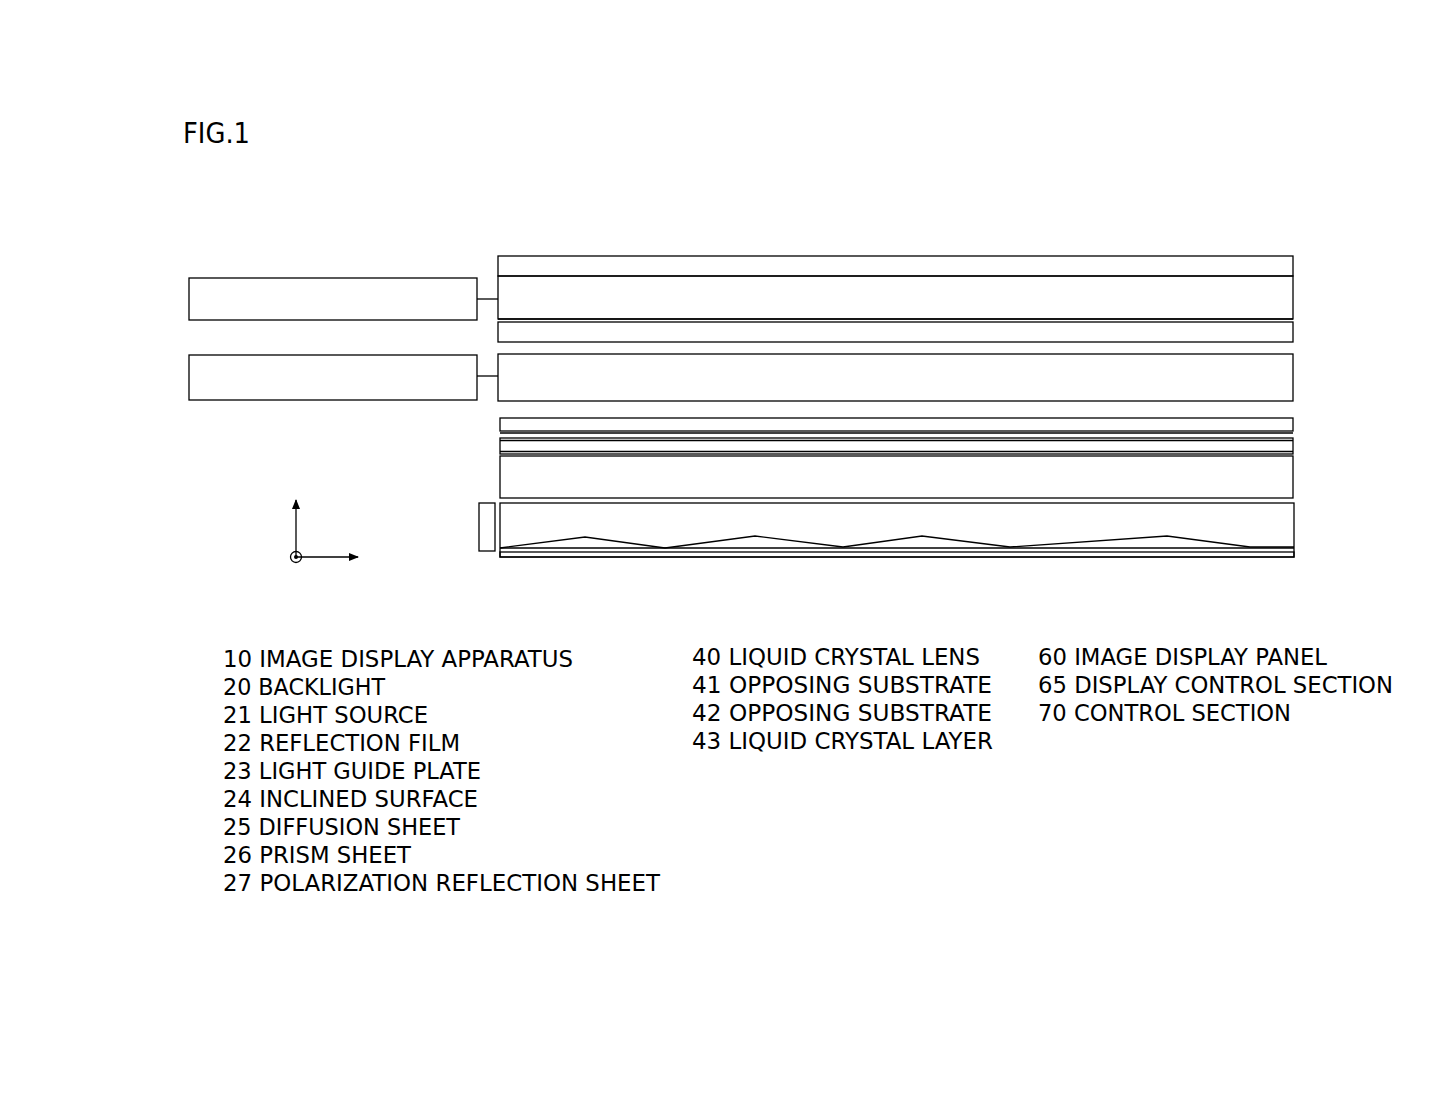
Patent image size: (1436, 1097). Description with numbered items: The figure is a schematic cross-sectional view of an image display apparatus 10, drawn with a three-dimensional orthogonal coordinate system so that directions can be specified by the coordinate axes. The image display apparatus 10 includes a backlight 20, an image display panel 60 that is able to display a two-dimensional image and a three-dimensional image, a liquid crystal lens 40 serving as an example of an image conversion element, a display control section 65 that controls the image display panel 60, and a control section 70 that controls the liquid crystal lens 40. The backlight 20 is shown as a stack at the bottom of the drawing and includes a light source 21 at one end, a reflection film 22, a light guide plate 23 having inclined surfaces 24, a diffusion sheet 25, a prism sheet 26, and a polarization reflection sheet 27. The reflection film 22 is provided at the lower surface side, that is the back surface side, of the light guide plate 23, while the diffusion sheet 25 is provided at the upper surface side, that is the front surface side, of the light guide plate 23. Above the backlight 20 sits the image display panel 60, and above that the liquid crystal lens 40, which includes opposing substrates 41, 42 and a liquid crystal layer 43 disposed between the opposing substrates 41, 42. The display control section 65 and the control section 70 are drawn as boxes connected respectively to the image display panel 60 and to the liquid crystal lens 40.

The image display apparatus 10 is at (1338, 187).
The backlight 20 is at (932, 497).
The light source 21 is at (480, 548).
The reflection film 22 is at (1137, 558).
The light guide plate 23 is at (897, 549).
The inclined surfaces 24 is at (567, 548).
The diffusion sheet 25 is at (1263, 478).
The prism sheet 26 is at (1277, 447).
The polarization reflection sheet 27 is at (1283, 425).
The liquid crystal lens 40 is at (964, 288).
The opposing substrate 41 is at (926, 327).
The opposing substrate 42 is at (1263, 268).
The liquid crystal layer 43 is at (1265, 304).
The image display panel 60 is at (1263, 384).
The display control section 65 is at (343, 377).
The control section 70 is at (343, 299).